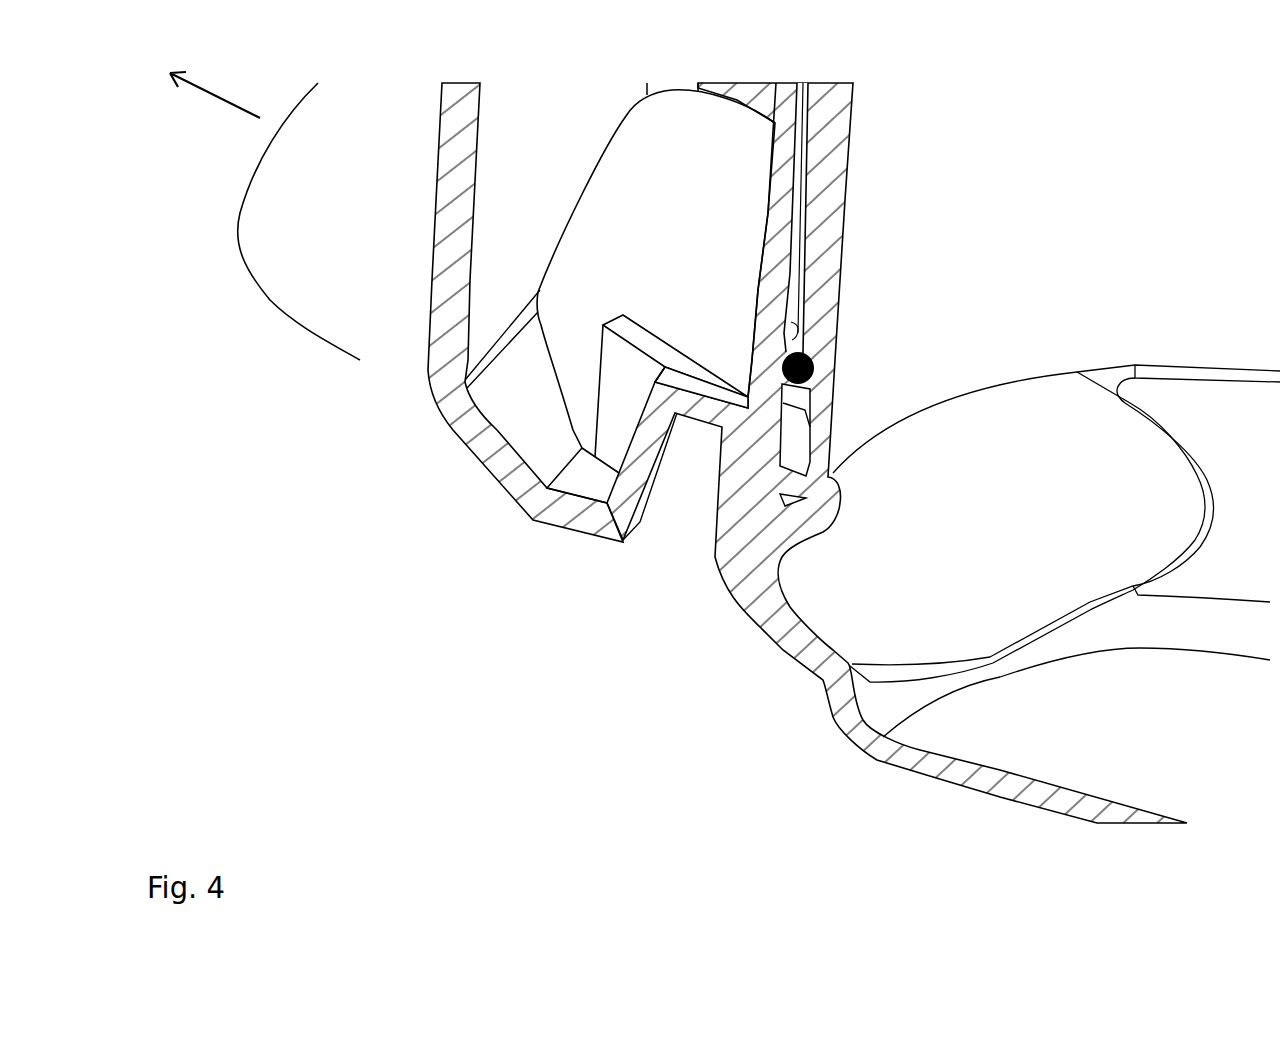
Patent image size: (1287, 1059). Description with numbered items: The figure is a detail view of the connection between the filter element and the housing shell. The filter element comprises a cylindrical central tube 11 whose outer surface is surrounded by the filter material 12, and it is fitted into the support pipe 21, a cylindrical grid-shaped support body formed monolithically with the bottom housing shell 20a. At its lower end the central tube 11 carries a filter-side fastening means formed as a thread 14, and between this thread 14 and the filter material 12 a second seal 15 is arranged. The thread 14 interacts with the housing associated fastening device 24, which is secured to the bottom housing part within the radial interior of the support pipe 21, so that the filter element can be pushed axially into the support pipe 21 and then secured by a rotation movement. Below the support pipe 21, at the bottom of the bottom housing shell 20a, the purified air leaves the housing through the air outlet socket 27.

The central tube 11 is at (847, 163).
The filter material 12 is at (800, 278).
The thread 14 is at (800, 417).
The second seal 15 is at (785, 353).
The support pipe 21 is at (777, 257).
The housing associated fastening device 24 is at (788, 393).
The air outlet socket 27 is at (350, 348).
The bottom housing shell 20a is at (400, 514).